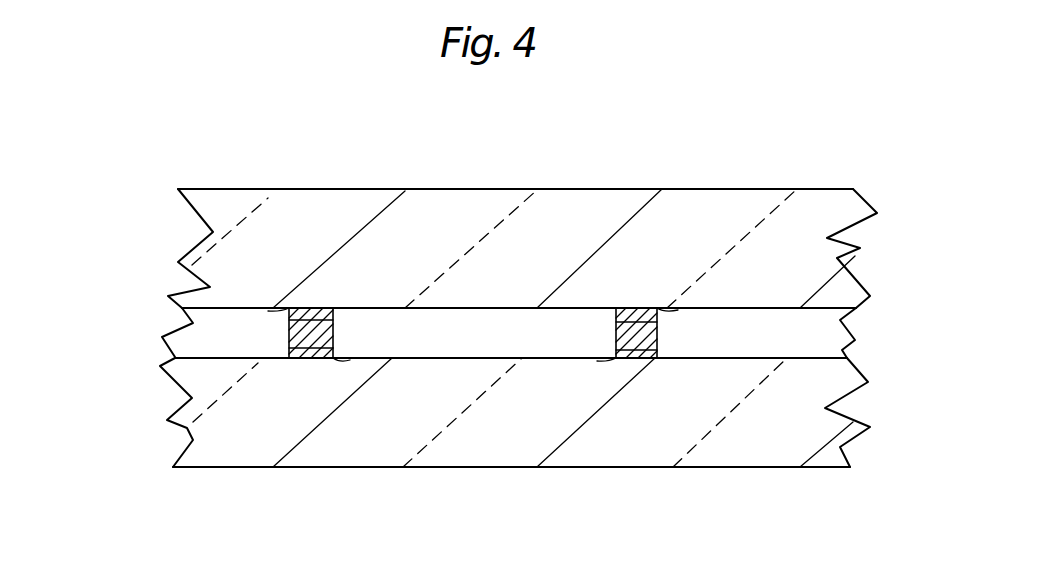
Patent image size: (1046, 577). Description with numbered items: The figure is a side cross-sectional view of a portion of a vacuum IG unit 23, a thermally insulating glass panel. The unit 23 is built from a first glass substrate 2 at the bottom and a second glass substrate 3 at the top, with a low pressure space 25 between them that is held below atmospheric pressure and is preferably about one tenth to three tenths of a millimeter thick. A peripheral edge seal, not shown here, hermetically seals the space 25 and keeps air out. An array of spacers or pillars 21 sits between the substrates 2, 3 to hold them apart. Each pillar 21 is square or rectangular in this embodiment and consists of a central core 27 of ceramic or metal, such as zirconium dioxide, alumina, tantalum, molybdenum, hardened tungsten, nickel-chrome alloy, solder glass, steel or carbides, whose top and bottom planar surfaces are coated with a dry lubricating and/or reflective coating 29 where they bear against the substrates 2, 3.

The vacuum IG unit 23 is at (160, 147).
The second glass substrate 3 is at (628, 207).
The first glass substrate 2 is at (730, 455).
The low pressure space 25 is at (443, 320).
The central core 27 is at (320, 333).
The dry lubricating and/or reflective coating 29 is at (278, 312).
The spacer pillar 21 is at (270, 333).